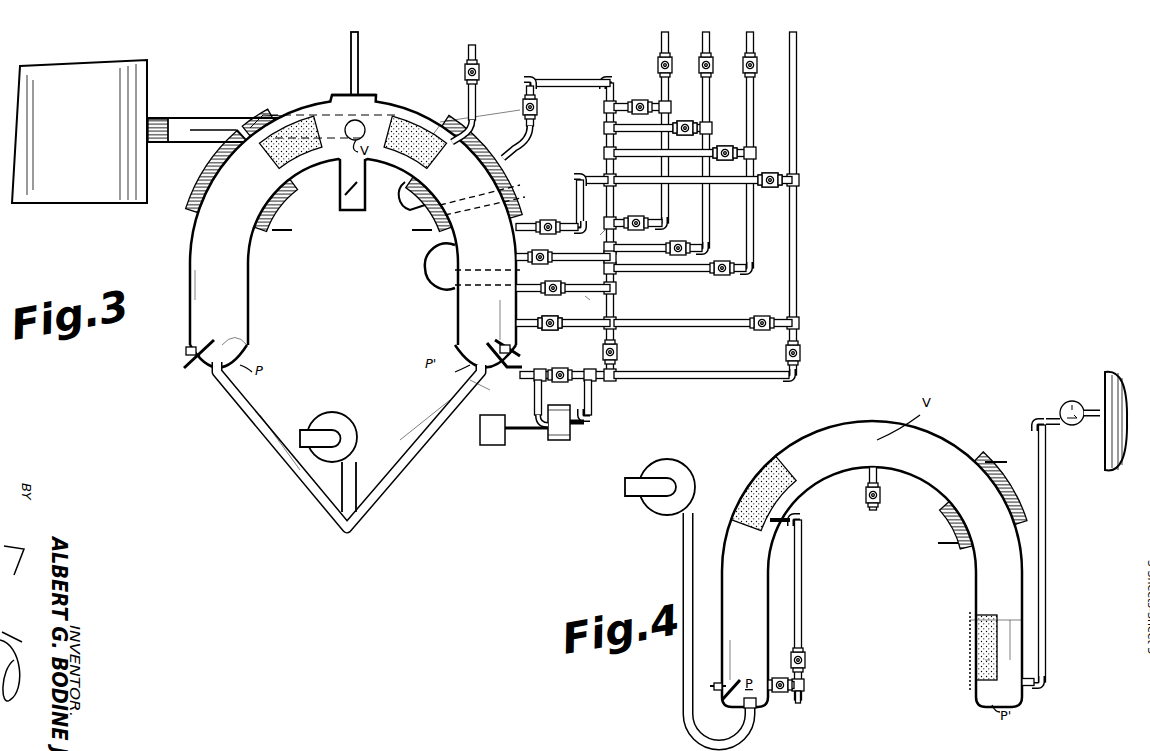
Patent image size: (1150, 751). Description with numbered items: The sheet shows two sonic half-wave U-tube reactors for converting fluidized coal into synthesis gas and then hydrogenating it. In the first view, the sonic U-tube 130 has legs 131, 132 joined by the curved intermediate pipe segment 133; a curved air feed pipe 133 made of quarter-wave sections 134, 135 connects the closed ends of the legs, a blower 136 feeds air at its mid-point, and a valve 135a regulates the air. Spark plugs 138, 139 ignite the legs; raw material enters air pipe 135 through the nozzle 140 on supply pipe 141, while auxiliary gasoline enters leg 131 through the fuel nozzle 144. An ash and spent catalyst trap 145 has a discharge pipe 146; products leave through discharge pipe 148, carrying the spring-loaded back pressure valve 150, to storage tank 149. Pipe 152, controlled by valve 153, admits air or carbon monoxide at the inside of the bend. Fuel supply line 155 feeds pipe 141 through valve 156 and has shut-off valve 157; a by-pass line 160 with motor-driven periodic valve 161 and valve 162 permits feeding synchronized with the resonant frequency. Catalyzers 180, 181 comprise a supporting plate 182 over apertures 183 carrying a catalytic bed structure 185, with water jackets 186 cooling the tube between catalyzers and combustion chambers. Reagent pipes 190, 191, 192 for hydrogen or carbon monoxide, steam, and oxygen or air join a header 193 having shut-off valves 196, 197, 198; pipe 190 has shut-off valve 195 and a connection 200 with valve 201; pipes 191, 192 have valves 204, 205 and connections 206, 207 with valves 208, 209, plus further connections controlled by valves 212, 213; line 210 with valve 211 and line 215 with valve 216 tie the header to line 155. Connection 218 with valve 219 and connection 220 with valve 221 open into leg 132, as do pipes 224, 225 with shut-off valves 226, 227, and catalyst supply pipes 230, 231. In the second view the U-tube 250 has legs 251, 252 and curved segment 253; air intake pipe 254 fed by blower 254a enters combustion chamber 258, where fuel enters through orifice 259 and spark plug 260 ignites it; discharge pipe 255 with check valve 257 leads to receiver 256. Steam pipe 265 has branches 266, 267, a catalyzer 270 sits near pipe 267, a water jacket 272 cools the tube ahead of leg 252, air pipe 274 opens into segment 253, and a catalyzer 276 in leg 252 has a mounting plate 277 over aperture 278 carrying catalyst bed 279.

In FIG. 3, the sonic U-tube 130 is at (185, 268).
In FIG. 3, the leg 131 is at (190, 283).
In FIG. 3, the leg 132 is at (505, 268).
In FIG. 3, the curved intermediate pipe segment 133 is at (395, 190).
In FIG. 3, the quarterwave section 134 is at (275, 452).
In FIG. 3, the quarterwave section 135 is at (442, 433).
In FIG. 3, the valve 135a is at (468, 380).
In FIG. 3, the blower 136 is at (345, 422).
In FIG. 3, the spark plug 138 is at (185, 365).
In FIG. 3, the spark plug 139 is at (502, 340).
In FIG. 3, the nozzle 140 is at (478, 345).
In FIG. 3, the supply pipe 141 is at (515, 378).
In FIG. 3, the fuel nozzle 144 is at (240, 350).
In FIG. 3, the ash and spent catalyst trap 145 is at (365, 95).
In FIG. 3, the discharge pipe 146 is at (359, 48).
In FIG. 3, the discharge pipe 148 is at (262, 115).
In FIG. 3, the storage tank 149 is at (147, 62).
In FIG. 3, the spring-loaded back pressure valve 150 is at (185, 122).
In FIG. 3, the pipe 152 is at (370, 210).
In FIG. 3, the valve 153 is at (350, 200).
In FIG. 3, the fuel supply line 155 is at (797, 135).
In FIG. 3, the valve 156 is at (562, 383).
In FIG. 3, the control or shut-off valve 157 is at (803, 355).
In FIG. 3, the by-pass line 160 is at (592, 398).
In FIG. 3, the periodic valve 161 is at (572, 440).
In FIG. 3, the control or shut-off valve 162 is at (535, 440).
In FIG. 3, the catalyzer 180 is at (301, 84).
In FIG. 3, the catalyzer 181 is at (438, 118).
In FIG. 3, the supporting plate 182 is at (305, 103).
In FIG. 3, the apertures 183 is at (278, 172).
In FIG. 3, the catalytic bed structure 185 is at (280, 138).
In FIG. 3, the water jackets 186 is at (196, 200).
In FIG. 3, the pipe 190 is at (655, 38).
In FIG. 3, the pipe 191 is at (712, 38).
In FIG. 3, the pipe 192 is at (756, 38).
In FIG. 3, the header 193 is at (605, 147).
In FIG. 3, the shut-off valve 195 is at (657, 68).
In FIG. 3, the shut-off valve 196 is at (650, 87).
In FIG. 3, the shut-off valve 197 is at (600, 232).
In FIG. 3, the shut-off valve 198 is at (618, 352).
In FIG. 3, the connection 200 is at (627, 255).
In FIG. 3, the valve 201 is at (634, 212).
In FIG. 3, the valve 204 is at (698, 70).
In FIG. 3, the valve 205 is at (742, 70).
In FIG. 3, the connection 206 is at (630, 136).
In FIG. 3, the connection 207 is at (628, 160).
In FIG. 3, the valve 208 is at (690, 120).
In FIG. 3, the valve 209 is at (730, 145).
In FIG. 3, the line 210 is at (678, 190).
In FIG. 3, the valve 211 is at (768, 190).
In FIG. 3, the valve 212 is at (678, 258).
In FIG. 3, the valve 213 is at (722, 278).
In FIG. 3, the line 215 is at (708, 334).
In FIG. 3, the valve 216 is at (772, 316).
In FIG. 3, the pipe connection 218 is at (578, 330).
In FIG. 3, the valve 219 is at (548, 333).
In FIG. 3, the connection 220 is at (590, 298).
In FIG. 3, the valve 221 is at (565, 280).
In FIG. 3, the pipe 224 is at (575, 195).
In FIG. 3, the pipe 225 is at (575, 80).
In FIG. 3, the shut-off valve 226 is at (556, 212).
In FIG. 3, the shut-off valve 227 is at (540, 108).
In FIG. 3, the catalyst supply pipe 230 is at (545, 248).
In FIG. 3, the catalyst supply pipe 231 is at (477, 58).
In FIG. 4, the U-tube sonic resonant reactor 250 is at (851, 405).
In FIG. 4, the leg 251 is at (735, 640).
In FIG. 4, the leg 252 is at (1010, 640).
In FIG. 4, the curved intermediate pipe segment 253 is at (965, 440).
In FIG. 4, the high impedance air intake pipe 254 is at (681, 575).
In FIG. 4, the blower 254a is at (672, 462).
In FIG. 4, the discharge pipe 255 is at (1046, 555).
In FIG. 4, the receiver 256 is at (1108, 470).
In FIG. 4, the spring-loaded check valve 257 is at (1066, 402).
In FIG. 4, the combustion chamber 258 is at (756, 700).
In FIG. 4, the orifice 259 is at (738, 680).
In FIG. 4, the spark plug 260 is at (713, 688).
In FIG. 4, the steam pipe 265 is at (802, 700).
In FIG. 4, the branch 266 is at (808, 682).
In FIG. 4, the branch 267 is at (803, 600).
In FIG. 4, the catalyzer 270 is at (758, 458).
In FIG. 4, the water jacket 272 is at (945, 525).
In FIG. 4, the pipe 274 is at (866, 490).
In FIG. 4, the catalyzer 276 is at (967, 681).
In FIG. 4, the mounting plate 277 is at (968, 650).
In FIG. 4, the aperture 278 is at (990, 614).
In FIG. 4, the catalyst bed 279 is at (990, 660).